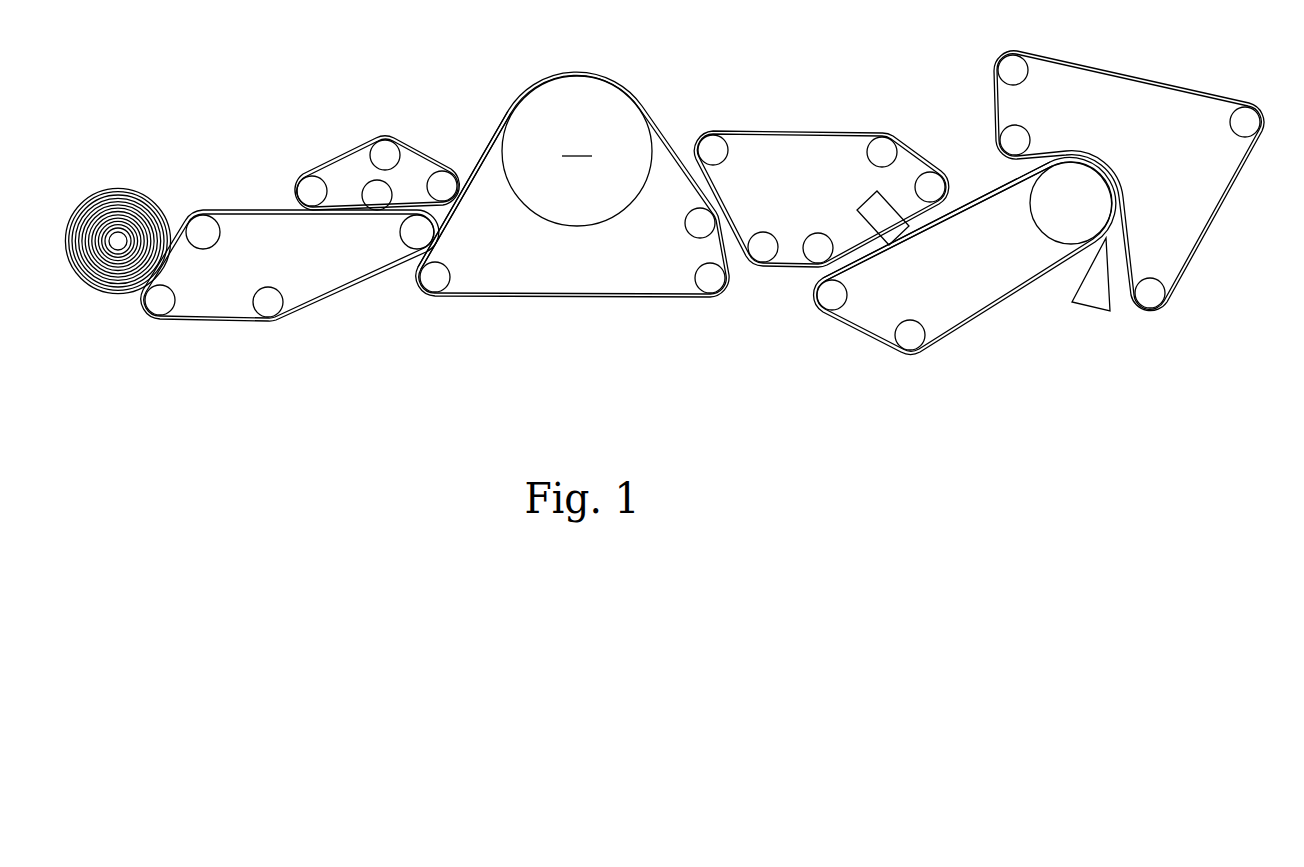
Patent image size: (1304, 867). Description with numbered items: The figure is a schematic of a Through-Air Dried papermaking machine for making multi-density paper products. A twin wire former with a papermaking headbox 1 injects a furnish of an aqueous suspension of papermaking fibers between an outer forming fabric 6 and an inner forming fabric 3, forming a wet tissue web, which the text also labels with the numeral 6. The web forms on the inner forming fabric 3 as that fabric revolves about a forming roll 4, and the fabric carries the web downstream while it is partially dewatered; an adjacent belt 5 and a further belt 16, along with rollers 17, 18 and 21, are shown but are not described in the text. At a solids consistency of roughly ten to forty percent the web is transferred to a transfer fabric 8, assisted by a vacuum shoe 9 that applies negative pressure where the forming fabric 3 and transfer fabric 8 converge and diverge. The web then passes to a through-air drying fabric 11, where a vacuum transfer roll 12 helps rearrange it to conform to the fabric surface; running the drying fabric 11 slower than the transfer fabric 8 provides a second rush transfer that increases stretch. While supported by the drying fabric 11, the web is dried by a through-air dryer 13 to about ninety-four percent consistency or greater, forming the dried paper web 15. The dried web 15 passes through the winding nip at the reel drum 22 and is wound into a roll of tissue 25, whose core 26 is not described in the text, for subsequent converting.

The papermaking headbox 1 is at (1090, 308).
The inner forming fabric 3 is at (986, 317).
The forming roll 4 is at (1031, 213).
The upper conveyor belt 5 is at (1143, 74).
The outer forming fabric 6 is at (997, 192).
The transfer fabric 8 is at (822, 131).
The vacuum shoe 9 is at (868, 200).
The through-air drying fabric 11 is at (593, 298).
The vacuum transfer roll 12 is at (685, 221).
The through-air dryer 13 is at (577, 151).
The dried paper web 15 is at (482, 147).
The belt 16 is at (343, 151).
The roller 17 is at (424, 177).
The conveyor belt 18 is at (333, 296).
The roller 21 is at (221, 228).
The reel drum 22 is at (153, 323).
The roll of tissue 25 is at (98, 294).
The roll core 26 is at (118, 230).